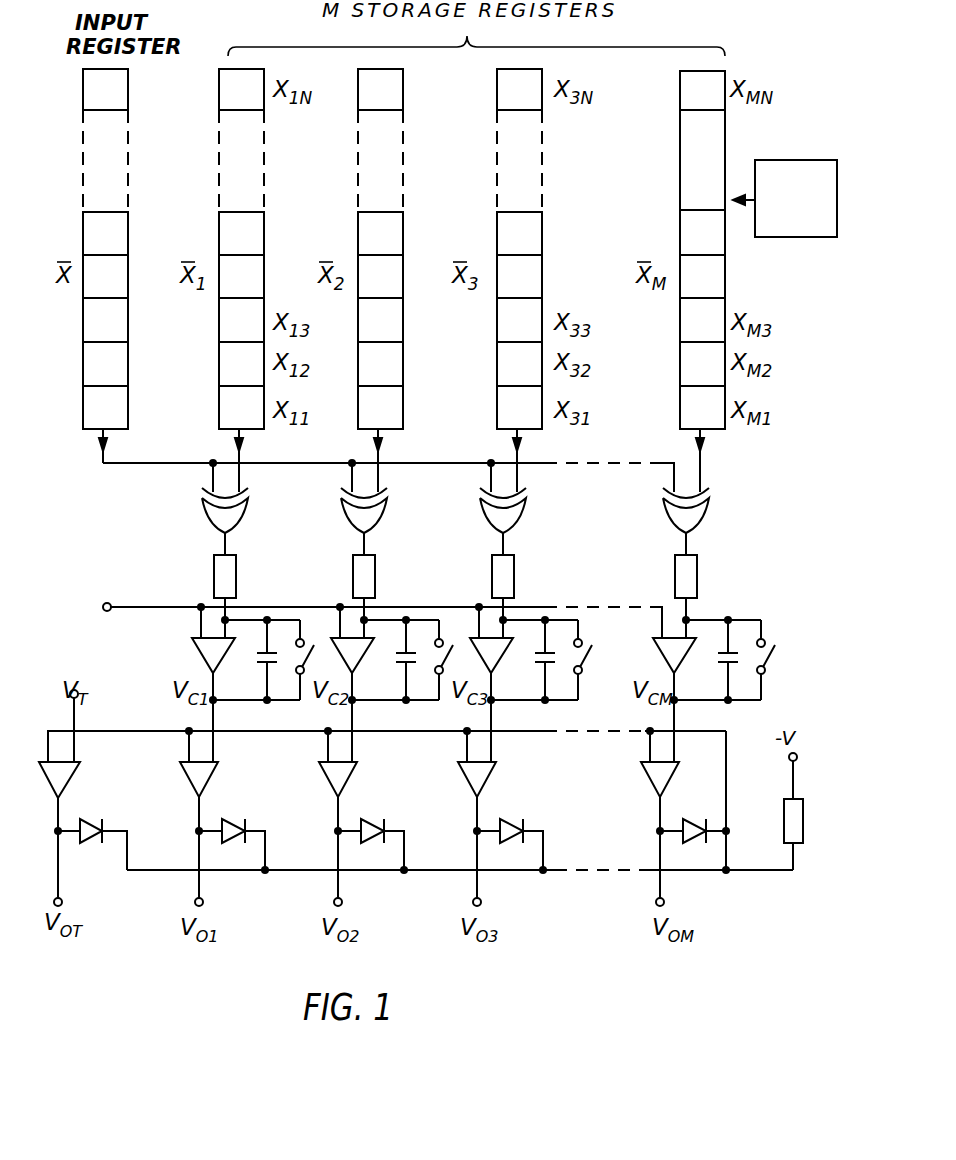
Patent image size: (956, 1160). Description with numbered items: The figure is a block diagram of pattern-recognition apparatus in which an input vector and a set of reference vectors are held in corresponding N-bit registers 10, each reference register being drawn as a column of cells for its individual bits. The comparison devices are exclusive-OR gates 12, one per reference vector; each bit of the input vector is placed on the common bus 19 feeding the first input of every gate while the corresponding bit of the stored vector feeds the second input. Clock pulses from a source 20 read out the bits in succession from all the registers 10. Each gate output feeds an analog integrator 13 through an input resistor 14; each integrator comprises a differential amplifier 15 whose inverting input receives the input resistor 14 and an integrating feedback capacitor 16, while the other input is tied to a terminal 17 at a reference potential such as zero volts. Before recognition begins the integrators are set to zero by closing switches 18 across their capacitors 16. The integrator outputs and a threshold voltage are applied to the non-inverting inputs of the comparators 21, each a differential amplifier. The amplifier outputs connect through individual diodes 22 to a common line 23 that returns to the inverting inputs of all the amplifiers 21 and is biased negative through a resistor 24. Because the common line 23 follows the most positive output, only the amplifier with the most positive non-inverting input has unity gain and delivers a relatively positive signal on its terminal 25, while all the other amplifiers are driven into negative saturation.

The N-bit registers 10 is at (219, 87).
The exclusive-OR gates 12 is at (343, 522).
The analog integrators 13 is at (199, 600).
The input resistors 14 is at (353, 570).
The differential amplifier 15 is at (194, 657).
The integrating feedback capacitors 16 is at (260, 666).
The terminal 17 is at (107, 589).
The switches 18 is at (310, 636).
The common bus 19 is at (440, 465).
The source 20 is at (799, 237).
The comparators 21 is at (180, 766).
The diodes 22 is at (92, 822).
The common line 23 is at (728, 775).
The resistor 24 is at (783, 824).
The terminal 25 is at (195, 902).